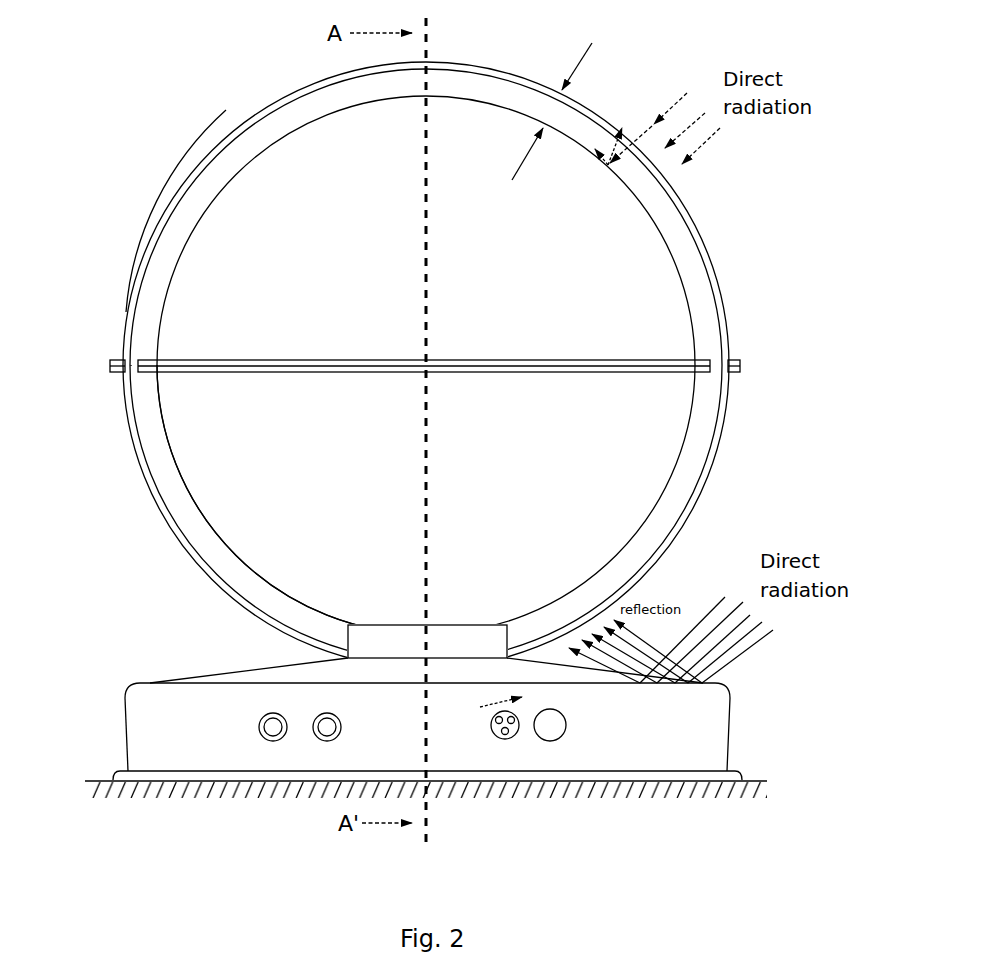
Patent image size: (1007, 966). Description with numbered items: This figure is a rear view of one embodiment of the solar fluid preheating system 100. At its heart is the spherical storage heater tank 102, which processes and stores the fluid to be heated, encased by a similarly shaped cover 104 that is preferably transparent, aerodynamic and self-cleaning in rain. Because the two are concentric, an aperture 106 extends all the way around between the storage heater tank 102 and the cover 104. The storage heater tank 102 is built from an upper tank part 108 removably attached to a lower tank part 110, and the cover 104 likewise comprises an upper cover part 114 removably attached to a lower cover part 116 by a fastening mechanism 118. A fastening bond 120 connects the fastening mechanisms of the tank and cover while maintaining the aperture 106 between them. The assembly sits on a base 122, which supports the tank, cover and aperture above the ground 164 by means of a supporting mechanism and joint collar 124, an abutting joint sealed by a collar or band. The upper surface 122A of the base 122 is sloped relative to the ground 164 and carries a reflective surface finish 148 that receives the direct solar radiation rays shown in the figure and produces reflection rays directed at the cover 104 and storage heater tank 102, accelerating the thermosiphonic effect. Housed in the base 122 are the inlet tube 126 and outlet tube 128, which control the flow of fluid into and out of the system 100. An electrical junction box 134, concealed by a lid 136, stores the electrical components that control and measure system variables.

The solar fluid preheating system 100 is at (205, 122).
The storage heater tank 102 is at (692, 293).
The cover 104 is at (704, 231).
The aperture 106 is at (553, 112).
The upper tank part 108 is at (170, 332).
The lower tank part 110 is at (206, 490).
The upper cover part 114 is at (140, 258).
The lower cover part 116 is at (126, 427).
The fastening mechanism 118 is at (106, 372).
The fastening bond 120 is at (660, 378).
The base 122 is at (118, 721).
The upper surface 122A is at (216, 670).
The supporting mechanism and joint collar 124 is at (364, 644).
The inlet tube 126 is at (323, 750).
The outlet tube 128 is at (269, 750).
The electrical junction box 134 is at (500, 750).
The lid 136 is at (552, 752).
The reflective surface finish 148 is at (184, 679).
The ground 164 is at (758, 792).